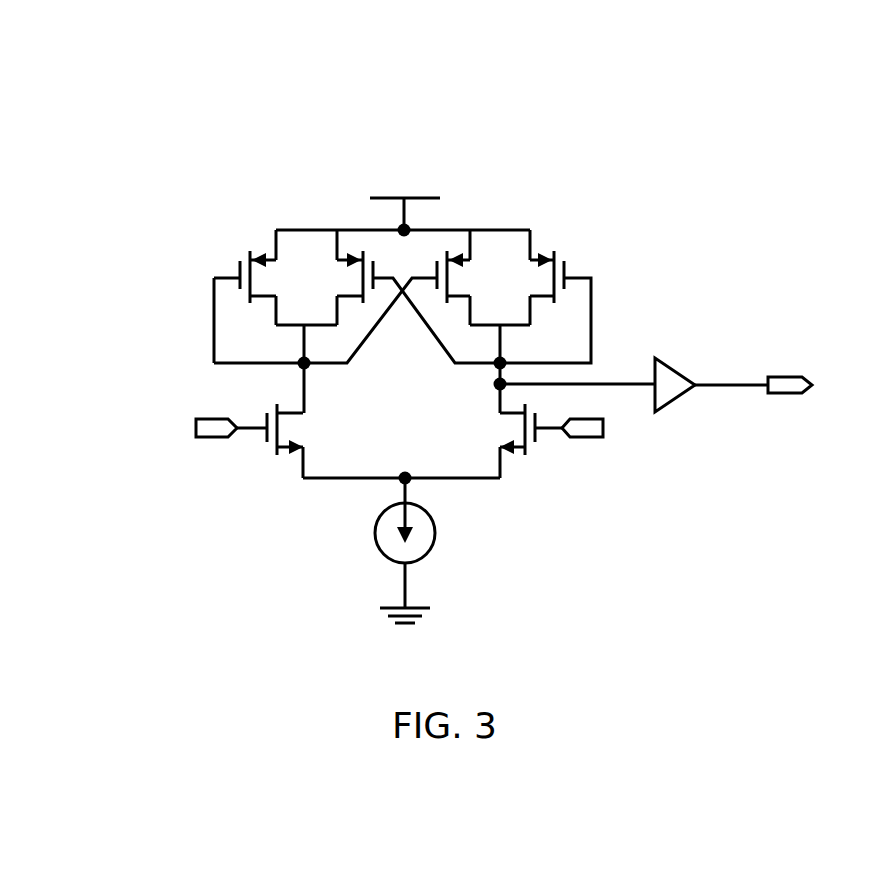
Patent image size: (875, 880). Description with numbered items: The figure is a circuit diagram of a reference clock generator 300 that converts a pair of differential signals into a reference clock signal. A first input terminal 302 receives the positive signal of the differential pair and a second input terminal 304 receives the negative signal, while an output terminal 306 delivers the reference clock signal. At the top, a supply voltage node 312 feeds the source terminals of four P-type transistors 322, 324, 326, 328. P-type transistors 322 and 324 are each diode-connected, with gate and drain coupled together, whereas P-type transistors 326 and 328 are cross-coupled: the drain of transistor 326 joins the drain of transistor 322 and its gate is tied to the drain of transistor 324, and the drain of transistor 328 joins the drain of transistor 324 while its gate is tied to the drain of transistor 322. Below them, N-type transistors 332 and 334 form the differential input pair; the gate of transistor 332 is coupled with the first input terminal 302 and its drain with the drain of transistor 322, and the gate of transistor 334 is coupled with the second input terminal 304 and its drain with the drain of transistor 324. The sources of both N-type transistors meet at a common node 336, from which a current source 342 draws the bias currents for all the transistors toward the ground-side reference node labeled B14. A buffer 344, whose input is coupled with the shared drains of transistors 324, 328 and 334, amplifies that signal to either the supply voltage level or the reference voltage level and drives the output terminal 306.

The reference clock generator 300 is at (694, 152).
The first input terminal 302 is at (208, 437).
The second input terminal 304 is at (592, 437).
The output terminal 306 is at (788, 393).
The supply voltage node 312 is at (408, 220).
The P-type transistor 322 is at (244, 252).
The P-type transistor 324 is at (585, 270).
The P-type transistor 326 is at (352, 287).
The P-type transistor 328 is at (455, 287).
The N-type transistor 332 is at (297, 427).
The N-type transistor 334 is at (510, 427).
The common node 336 is at (400, 483).
The current source 342 is at (435, 533).
The buffer 344 is at (682, 368).
The ground node B14 is at (405, 588).